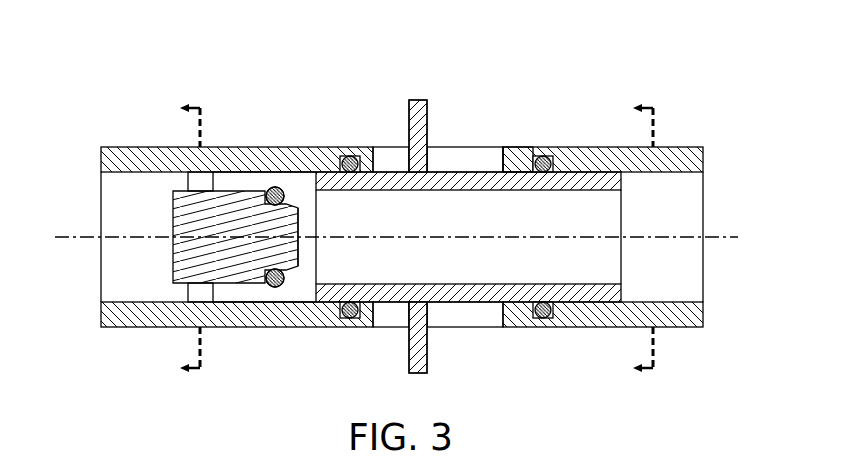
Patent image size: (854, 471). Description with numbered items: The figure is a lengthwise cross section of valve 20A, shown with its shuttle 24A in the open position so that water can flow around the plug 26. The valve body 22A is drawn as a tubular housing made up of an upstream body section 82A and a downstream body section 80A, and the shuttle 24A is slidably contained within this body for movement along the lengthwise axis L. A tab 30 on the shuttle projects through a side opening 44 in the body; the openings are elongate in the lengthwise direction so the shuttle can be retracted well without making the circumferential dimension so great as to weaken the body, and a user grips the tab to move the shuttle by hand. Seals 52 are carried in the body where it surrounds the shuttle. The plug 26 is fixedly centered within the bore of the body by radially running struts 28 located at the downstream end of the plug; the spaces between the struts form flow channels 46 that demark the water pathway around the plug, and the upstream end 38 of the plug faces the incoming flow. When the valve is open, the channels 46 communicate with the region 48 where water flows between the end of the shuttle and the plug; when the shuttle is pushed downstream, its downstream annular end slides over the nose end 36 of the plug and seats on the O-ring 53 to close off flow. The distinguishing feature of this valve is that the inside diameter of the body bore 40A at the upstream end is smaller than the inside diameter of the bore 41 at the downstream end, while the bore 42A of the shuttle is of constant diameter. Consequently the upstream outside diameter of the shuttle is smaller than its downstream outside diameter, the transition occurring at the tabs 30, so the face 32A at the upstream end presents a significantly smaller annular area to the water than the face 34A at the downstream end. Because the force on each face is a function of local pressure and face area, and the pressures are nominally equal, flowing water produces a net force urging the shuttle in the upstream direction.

The valve 20A is at (405, 199).
The first end of outer housing 22A is at (101, 335).
The shuttle 24A is at (474, 304).
The plug 26 is at (209, 194).
The struts 28 is at (188, 180).
The tabs 30 is at (428, 114).
The face 32A is at (525, 270).
The face 34A is at (317, 301).
The nose end 36 is at (299, 213).
The piston body 38 is at (173, 218).
The bore 40A is at (691, 302).
The bore 41 is at (258, 292).
The bore of the shuttle 42A is at (453, 190).
The side openings 44 is at (502, 157).
The flow channels 46 is at (243, 181).
The region 48 is at (308, 189).
The seal 52 is at (352, 317).
The O-ring 53 is at (291, 186).
The outer housing right section 80A is at (705, 163).
The outer housing left section 82A is at (103, 153).
The lengthwise axis L is at (727, 238).